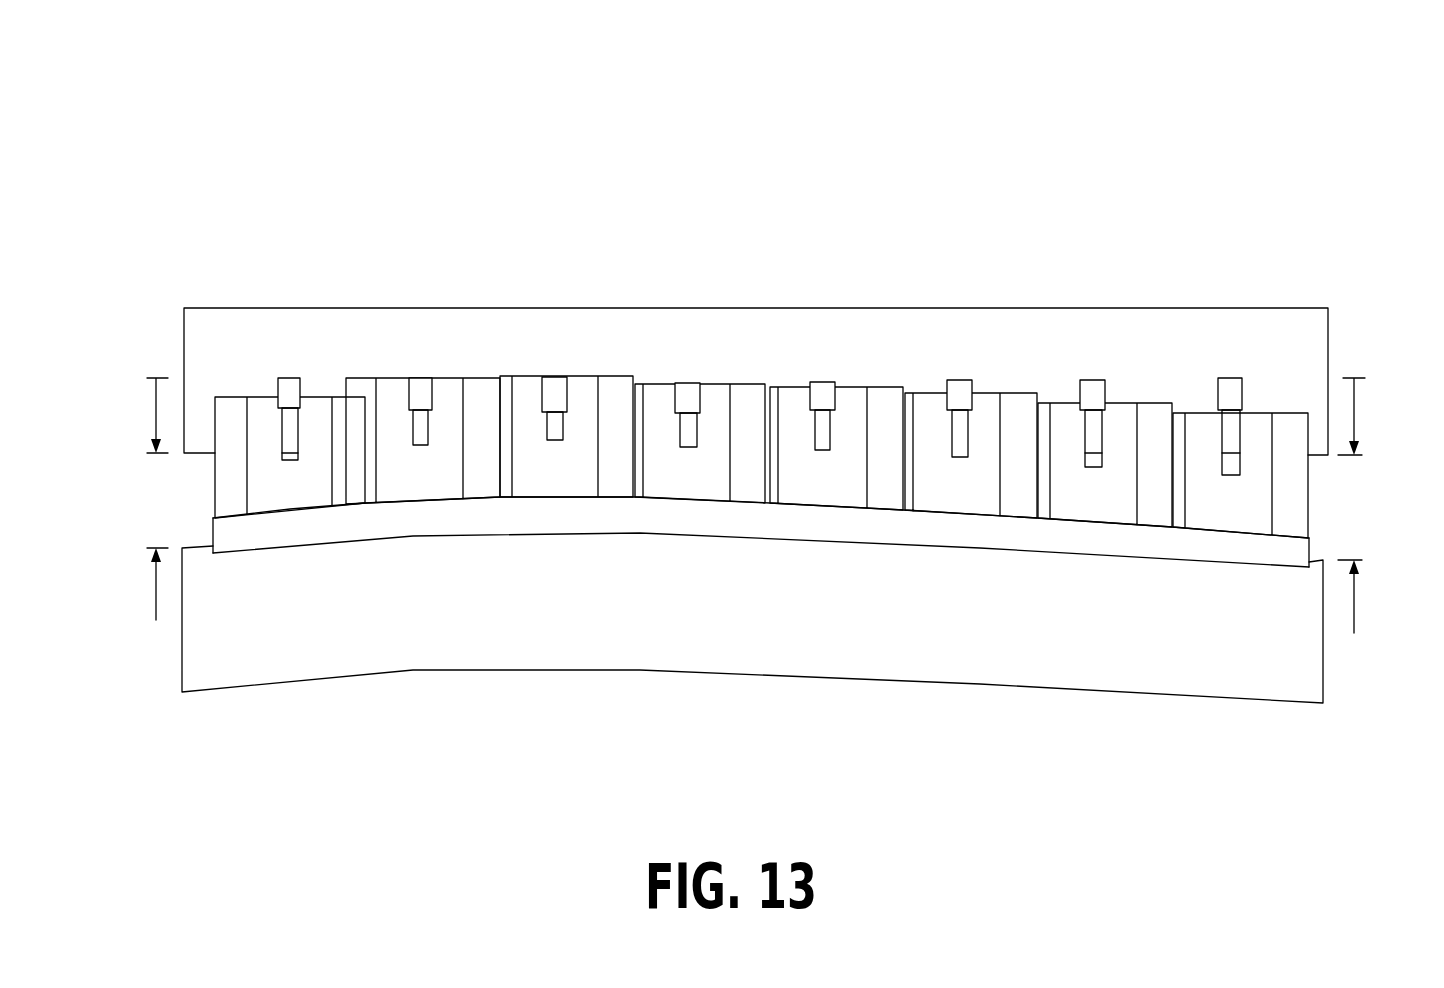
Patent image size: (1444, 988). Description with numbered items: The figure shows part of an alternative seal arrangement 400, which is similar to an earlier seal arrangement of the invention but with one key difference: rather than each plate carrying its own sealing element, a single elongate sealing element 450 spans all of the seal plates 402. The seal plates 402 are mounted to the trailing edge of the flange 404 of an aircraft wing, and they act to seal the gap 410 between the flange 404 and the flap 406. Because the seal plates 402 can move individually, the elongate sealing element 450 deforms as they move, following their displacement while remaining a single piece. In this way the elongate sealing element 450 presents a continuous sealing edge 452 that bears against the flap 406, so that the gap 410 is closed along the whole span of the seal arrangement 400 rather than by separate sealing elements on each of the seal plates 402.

The seal arrangement 400 is at (378, 142).
The seal plates 402 is at (311, 403).
The flange 404 is at (703, 361).
The flap 406 is at (698, 627).
The gap 410 is at (177, 504).
The elongate sealing element 450 is at (382, 523).
The continuous sealing edge 452 is at (942, 538).